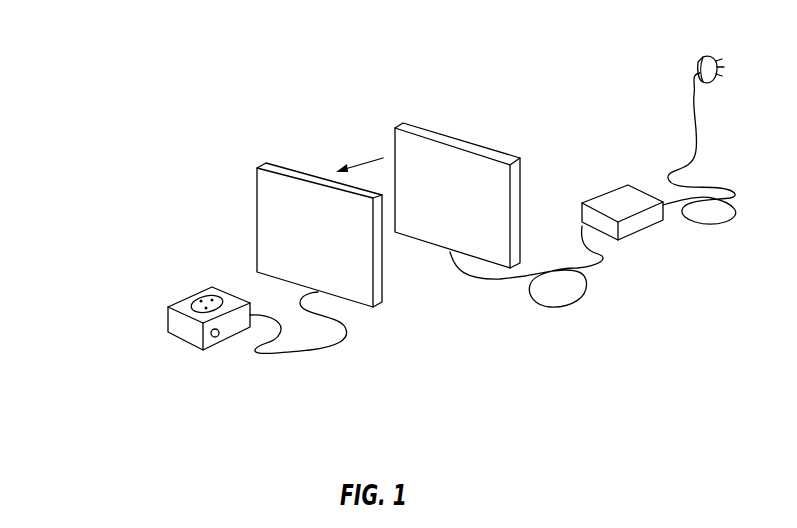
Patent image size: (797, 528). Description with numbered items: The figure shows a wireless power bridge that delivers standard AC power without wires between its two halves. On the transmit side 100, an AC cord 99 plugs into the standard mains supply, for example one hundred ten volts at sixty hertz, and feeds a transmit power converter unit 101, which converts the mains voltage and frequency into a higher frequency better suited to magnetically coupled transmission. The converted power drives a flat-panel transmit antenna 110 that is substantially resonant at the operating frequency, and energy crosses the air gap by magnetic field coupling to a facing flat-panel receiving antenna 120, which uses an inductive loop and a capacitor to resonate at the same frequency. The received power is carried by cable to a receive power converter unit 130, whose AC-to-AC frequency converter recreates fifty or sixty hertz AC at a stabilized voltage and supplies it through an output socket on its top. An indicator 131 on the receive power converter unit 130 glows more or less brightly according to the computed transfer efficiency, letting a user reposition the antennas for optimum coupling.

The transmit side 100 is at (199, 63).
The transmit antenna 110 is at (427, 128).
The receiving antenna 120 is at (277, 164).
The transmit power converter unit 101 is at (661, 258).
The AC cord 99 is at (733, 104).
The receive power converter unit 130 is at (186, 333).
The indicator 131 is at (216, 295).